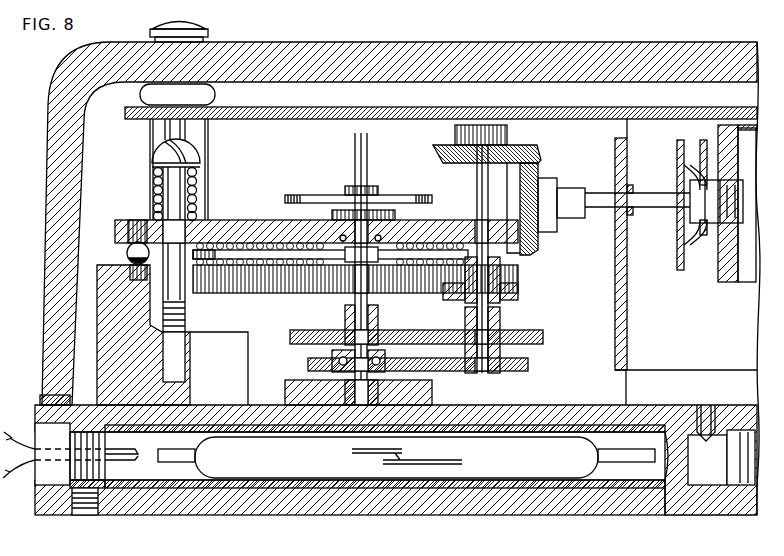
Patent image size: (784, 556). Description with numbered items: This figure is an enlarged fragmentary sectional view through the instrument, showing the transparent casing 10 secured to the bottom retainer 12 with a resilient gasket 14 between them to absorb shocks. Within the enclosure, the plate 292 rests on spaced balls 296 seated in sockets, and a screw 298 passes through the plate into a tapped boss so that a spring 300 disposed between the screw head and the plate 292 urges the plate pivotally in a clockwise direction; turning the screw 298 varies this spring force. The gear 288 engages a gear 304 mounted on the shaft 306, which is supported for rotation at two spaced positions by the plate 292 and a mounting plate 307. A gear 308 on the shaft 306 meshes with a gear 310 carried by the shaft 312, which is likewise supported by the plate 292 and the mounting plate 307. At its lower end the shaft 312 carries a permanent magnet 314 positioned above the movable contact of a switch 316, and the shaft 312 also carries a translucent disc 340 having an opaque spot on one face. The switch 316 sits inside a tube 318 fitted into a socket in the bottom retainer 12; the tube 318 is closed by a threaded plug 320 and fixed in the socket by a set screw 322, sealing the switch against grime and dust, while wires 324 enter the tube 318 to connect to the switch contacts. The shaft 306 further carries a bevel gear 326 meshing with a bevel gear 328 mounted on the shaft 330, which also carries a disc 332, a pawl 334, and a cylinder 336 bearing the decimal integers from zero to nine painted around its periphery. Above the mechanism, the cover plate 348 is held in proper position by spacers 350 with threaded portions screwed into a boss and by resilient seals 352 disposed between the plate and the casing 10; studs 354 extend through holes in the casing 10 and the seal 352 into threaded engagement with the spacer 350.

The casing 10 is at (48, 193).
The bottom retainer 12 is at (392, 505).
The gasket 14 is at (40, 398).
The gear 288 is at (515, 274).
The plate 292 is at (232, 232).
The balls 296 is at (128, 252).
The screw 298 is at (158, 155).
The spring 300 is at (152, 190).
The gear 304 is at (505, 295).
The shaft 306 is at (485, 374).
The mounting plate 307 is at (530, 364).
The gear 308 is at (544, 337).
The gear 310 is at (294, 333).
The shaft 312 is at (355, 295).
The permanent magnet 314 is at (292, 380).
The switch 316 is at (383, 463).
The tube 318 is at (458, 508).
The threaded plug 320 is at (103, 467).
The set screw 322 is at (85, 510).
The wires 324 is at (22, 470).
The bevel gear 326 is at (440, 148).
The bevel gear 328 is at (535, 158).
The shaft 330 is at (596, 192).
The disc 332 is at (680, 280).
The pawl 334 is at (704, 148).
The cylinder 336 is at (748, 283).
The translucent disc 340 is at (300, 195).
The cover plate 348 is at (412, 108).
The spacers 350 is at (212, 139).
The seals 352 is at (215, 95).
The studs 354 is at (205, 27).